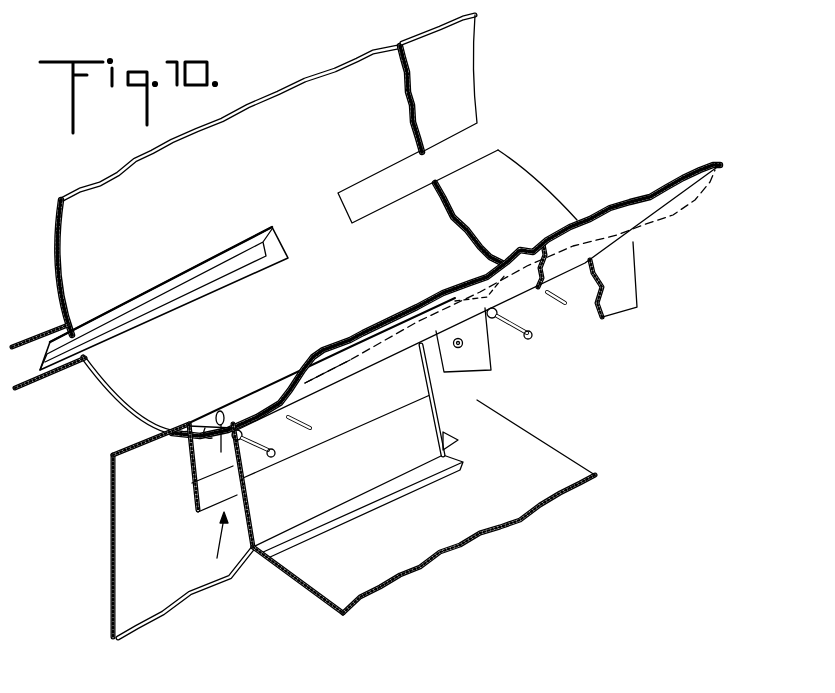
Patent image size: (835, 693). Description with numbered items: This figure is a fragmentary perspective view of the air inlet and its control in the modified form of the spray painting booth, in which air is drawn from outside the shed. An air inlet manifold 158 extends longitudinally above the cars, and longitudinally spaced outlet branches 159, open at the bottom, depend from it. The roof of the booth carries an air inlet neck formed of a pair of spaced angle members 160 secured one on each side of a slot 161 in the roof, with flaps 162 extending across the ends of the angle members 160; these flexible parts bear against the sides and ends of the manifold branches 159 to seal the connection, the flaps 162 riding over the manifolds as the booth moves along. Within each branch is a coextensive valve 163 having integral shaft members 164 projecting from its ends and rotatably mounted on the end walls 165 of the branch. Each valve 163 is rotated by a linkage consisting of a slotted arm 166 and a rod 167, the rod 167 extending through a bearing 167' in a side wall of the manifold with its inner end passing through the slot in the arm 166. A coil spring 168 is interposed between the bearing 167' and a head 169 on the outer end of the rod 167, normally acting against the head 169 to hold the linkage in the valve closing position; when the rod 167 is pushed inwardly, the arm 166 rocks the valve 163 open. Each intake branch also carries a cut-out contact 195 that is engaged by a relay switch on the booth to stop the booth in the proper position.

The air inlet manifold 158 is at (457, 75).
The outlet branches 159 is at (467, 163).
The angle members 160 is at (190, 498).
The slot 161 is at (210, 549).
The flaps 162 is at (436, 426).
The valve 163 is at (174, 293).
The shaft members 164 is at (462, 348).
The end walls 165 is at (475, 343).
The slotted arm 166 is at (218, 442).
The rod 167 is at (235, 412).
The bearing 167' is at (370, 339).
The coil spring 168 is at (510, 323).
The head 169 is at (533, 336).
The cut-out contact 195 is at (557, 308).